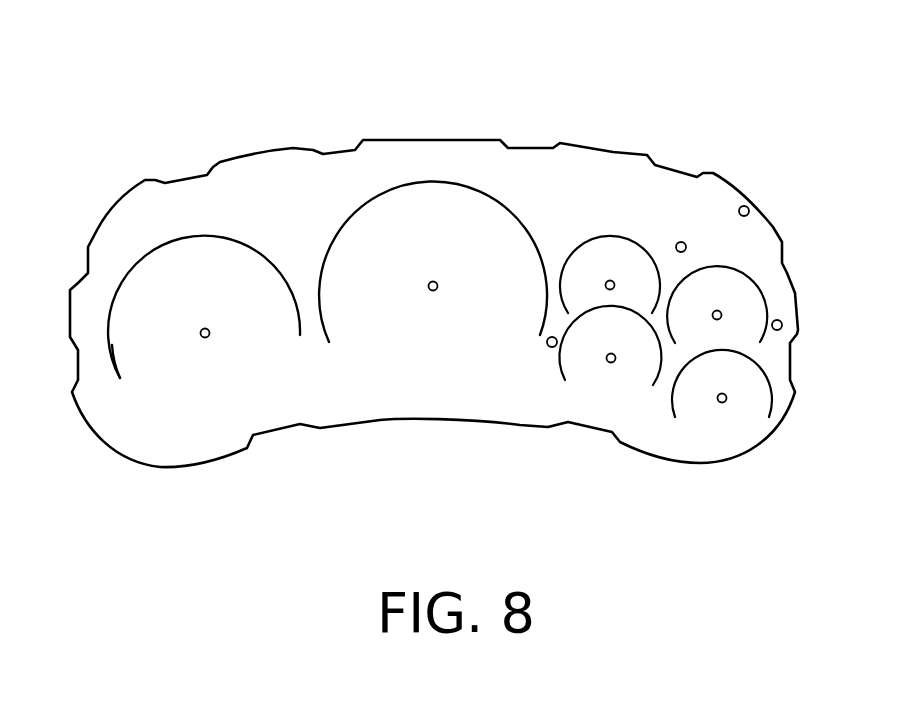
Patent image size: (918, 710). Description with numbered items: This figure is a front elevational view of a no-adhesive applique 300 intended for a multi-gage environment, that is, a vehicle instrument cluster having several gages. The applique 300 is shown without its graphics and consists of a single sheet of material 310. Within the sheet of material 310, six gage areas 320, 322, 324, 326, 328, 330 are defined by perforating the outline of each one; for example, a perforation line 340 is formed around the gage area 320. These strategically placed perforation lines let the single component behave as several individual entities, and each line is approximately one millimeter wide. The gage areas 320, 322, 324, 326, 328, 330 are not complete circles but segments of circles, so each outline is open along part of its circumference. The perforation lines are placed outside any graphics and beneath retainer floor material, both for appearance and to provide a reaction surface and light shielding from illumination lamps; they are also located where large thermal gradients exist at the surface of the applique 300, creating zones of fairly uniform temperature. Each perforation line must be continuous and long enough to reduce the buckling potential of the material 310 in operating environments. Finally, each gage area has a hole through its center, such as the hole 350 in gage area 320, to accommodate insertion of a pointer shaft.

The no-adhesive applique 300 is at (146, 94).
The single sheet of material 310 is at (535, 178).
The gage area 320 is at (148, 335).
The gage area 322 is at (407, 227).
The gage area 324 is at (612, 257).
The gage area 326 is at (727, 290).
The gage area 328 is at (583, 353).
The gage area 330 is at (748, 388).
The perforation line 340 is at (193, 237).
The hole 350 is at (202, 340).